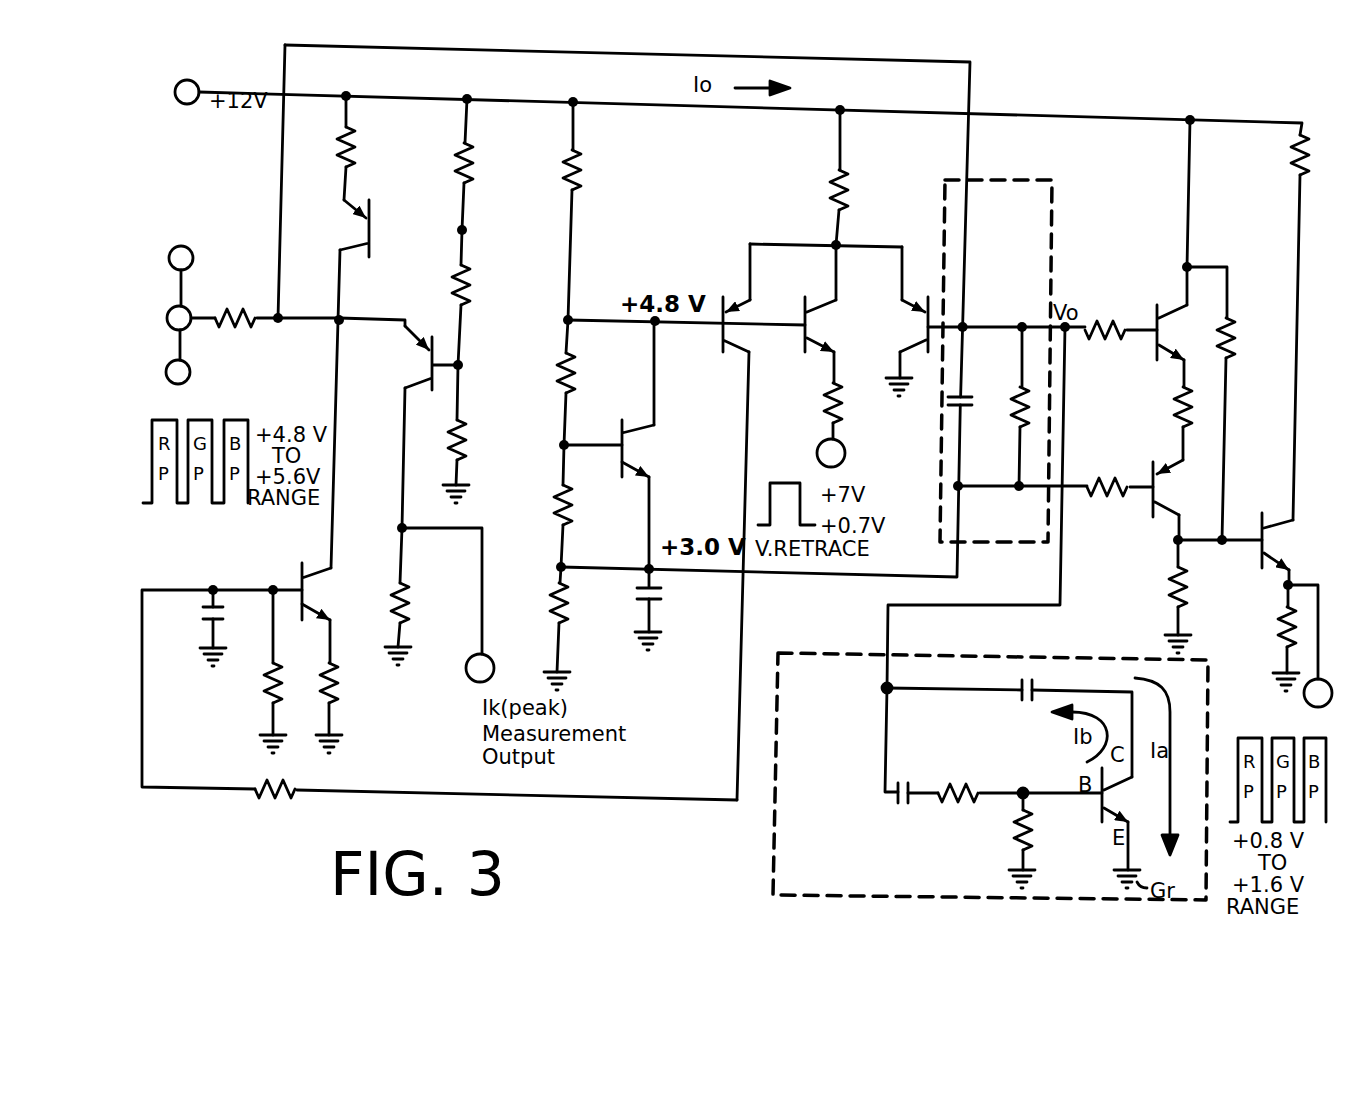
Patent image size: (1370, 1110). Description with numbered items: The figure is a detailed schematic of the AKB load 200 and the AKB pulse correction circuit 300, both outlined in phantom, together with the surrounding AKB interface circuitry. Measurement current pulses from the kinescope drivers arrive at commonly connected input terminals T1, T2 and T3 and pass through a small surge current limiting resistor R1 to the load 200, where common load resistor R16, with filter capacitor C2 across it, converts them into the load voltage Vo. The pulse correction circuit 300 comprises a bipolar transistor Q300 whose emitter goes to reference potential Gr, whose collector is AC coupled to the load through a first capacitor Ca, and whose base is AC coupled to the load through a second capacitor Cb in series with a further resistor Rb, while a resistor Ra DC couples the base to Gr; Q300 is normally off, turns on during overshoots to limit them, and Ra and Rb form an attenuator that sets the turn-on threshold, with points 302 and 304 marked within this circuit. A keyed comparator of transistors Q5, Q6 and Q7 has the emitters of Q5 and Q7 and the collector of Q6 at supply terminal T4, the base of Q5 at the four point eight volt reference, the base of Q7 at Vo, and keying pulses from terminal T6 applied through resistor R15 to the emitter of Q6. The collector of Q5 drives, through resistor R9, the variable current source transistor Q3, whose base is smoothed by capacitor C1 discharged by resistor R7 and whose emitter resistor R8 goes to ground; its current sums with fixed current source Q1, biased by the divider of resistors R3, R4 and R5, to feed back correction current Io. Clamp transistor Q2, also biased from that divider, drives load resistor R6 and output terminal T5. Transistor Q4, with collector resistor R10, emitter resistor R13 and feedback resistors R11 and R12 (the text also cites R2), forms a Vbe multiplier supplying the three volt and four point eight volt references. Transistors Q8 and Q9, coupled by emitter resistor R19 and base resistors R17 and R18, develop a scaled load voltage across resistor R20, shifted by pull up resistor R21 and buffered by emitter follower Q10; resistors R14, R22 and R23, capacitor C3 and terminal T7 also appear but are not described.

The input terminal T1 is at (165, 262).
The input terminal T2 is at (163, 318).
The input terminal T3 is at (163, 372).
The supply terminal T4 is at (170, 100).
The output terminal T5 is at (468, 684).
The keying pulse terminal T6 is at (814, 460).
The output terminal T7 is at (1308, 706).
The surge current limiting resistor R1 is at (250, 300).
The potential divider resistor R2 is at (358, 165).
The potential divider resistor R3 is at (476, 175).
The potential divider resistor R4 is at (474, 296).
The potential divider resistor R5 is at (470, 450).
The load resistor R6 is at (410, 620).
The discharge resistor R7 is at (260, 684).
The emitter resistor R8 is at (340, 682).
The input resistor R9 is at (275, 778).
The collector resistor R10 is at (588, 178).
The feedback divider resistor R11 is at (584, 390).
The feedback divider resistor R12 is at (576, 494).
The emitter resistor R13 is at (568, 604).
The resistor 20K R14 is at (852, 196).
The keying resistor R15 is at (820, 416).
The common load resistor R16 is at (998, 432).
The base coupling resistor R17 is at (1090, 320).
The base coupling resistor R18 is at (1098, 498).
The emitter coupling resistor R19 is at (1150, 426).
The load resistor R20 is at (1160, 588).
The pull up resistor R21 is at (1240, 338).
The resistor 1000 ohm R22 is at (1290, 160).
The resistor 1000 ohm R23 is at (1272, 636).
The smoothing capacitor C1 is at (196, 624).
The filter capacitor C2 is at (973, 398).
The capacitor 100 uF C3 is at (668, 594).
The fixed current source transistor Q1 is at (349, 228).
The voltage clamp transistor Q2 is at (424, 358).
The variable current source transistor Q3 is at (321, 591).
The reference voltage transistor Q4 is at (642, 448).
The keyed comparator transistor Q5 is at (735, 314).
The keyed comparator transistor Q6 is at (825, 324).
The keyed comparator transistor Q7 is at (905, 324).
The scaling transistor Q8 is at (1176, 332).
The scaling transistor Q9 is at (1174, 488).
The emitter follower Q10 is at (1291, 541).
The bipolar transistor Q300 is at (1135, 795).
The AKB load 200 is at (1027, 301).
The AKB pulse correction circuit 300 is at (784, 768).
The node 302 is at (882, 688).
The node 304 is at (1022, 785).
The first capacitor Ca is at (1020, 682).
The second capacitor Cb is at (905, 802).
The resistor Ra is at (1036, 826).
The further resistor Rb is at (954, 778).